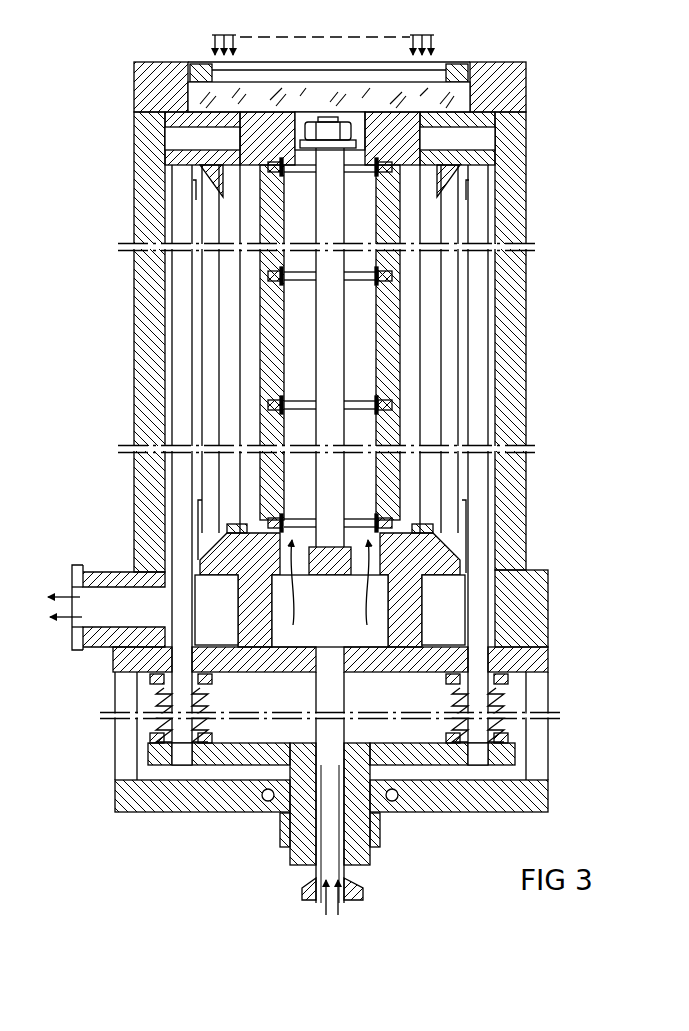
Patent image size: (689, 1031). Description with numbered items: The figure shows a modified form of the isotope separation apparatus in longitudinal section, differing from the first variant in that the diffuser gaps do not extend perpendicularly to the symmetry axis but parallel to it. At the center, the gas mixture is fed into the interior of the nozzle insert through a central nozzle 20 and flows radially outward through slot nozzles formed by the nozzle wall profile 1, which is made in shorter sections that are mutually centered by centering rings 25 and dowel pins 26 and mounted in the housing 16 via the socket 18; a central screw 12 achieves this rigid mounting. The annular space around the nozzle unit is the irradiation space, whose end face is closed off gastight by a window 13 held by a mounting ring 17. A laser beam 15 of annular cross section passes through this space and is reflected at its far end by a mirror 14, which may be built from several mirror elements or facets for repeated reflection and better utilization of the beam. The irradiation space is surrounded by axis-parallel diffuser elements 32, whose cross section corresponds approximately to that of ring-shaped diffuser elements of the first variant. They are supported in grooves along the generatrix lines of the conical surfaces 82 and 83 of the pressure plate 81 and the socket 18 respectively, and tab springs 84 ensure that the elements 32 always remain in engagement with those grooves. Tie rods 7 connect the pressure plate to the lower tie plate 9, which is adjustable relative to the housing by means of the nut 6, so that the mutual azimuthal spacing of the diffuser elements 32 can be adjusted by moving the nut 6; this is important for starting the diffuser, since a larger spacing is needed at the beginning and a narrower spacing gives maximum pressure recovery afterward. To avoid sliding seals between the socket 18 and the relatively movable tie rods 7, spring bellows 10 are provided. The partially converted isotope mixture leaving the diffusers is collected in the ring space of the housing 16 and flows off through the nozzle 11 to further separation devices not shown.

The nozzle wall profile 1 is at (410, 372).
The nut 6 is at (288, 830).
The tie rods 7 is at (182, 378).
The lower tie plate 9 is at (512, 751).
The spring bellows 10 is at (505, 700).
The nozzle 11 is at (76, 643).
The central screw 12 is at (325, 329).
The window 13 is at (440, 90).
The mirror 14 is at (237, 533).
The laser beam 15 is at (377, 46).
The housing 16 is at (146, 207).
The mounting ring 17 is at (166, 72).
The socket 18 is at (128, 663).
The central nozzle 20 is at (362, 892).
The centering rings 25 is at (378, 272).
The dowel pins 26 is at (281, 272).
The diffuser elements 32 is at (455, 298).
The pressure plate 81 is at (457, 139).
The conical surface 82 is at (450, 184).
The conical surface 83 is at (458, 548).
The tab springs 84 is at (470, 200).